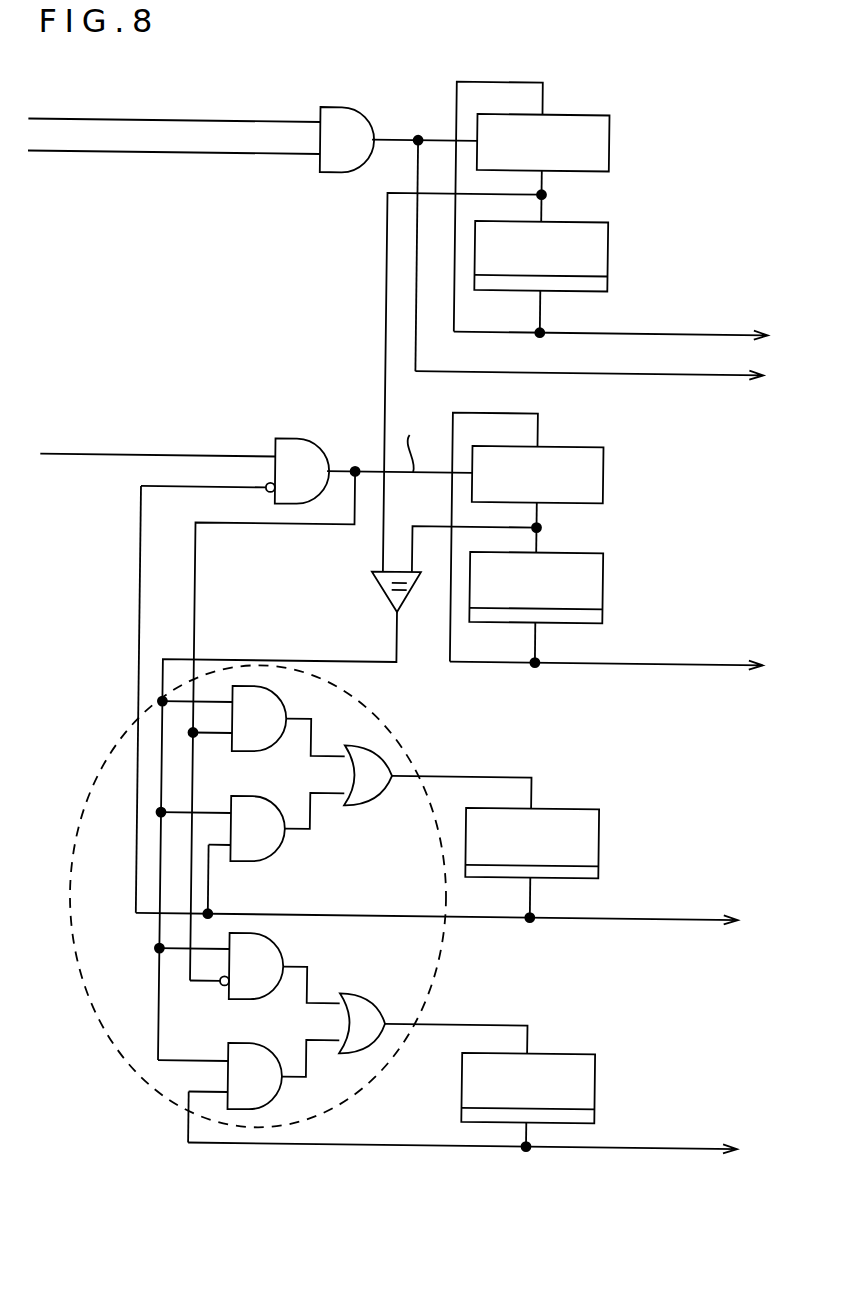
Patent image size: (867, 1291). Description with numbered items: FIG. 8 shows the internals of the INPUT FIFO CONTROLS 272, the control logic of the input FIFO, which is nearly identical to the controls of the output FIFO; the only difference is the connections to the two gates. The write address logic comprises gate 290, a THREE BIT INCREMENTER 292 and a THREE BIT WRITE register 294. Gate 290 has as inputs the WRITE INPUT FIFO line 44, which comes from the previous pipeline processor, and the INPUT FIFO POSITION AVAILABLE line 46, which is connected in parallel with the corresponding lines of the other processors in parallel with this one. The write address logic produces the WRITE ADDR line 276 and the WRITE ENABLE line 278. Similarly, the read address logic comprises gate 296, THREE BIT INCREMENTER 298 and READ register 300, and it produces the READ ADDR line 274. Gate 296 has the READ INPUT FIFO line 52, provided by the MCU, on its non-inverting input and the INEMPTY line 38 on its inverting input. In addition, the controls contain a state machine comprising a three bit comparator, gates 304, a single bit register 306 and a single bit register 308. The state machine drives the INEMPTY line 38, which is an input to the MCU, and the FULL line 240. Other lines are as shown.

The input FIFO controls 272 is at (257, 266).
The WRITE INPUT FIFO line 44 is at (295, 120).
The INPUT FIFO POSITION AVAILABLE line 46 is at (237, 157).
The gate 290 is at (333, 120).
The three bit incrementer 292 is at (595, 133).
The three bit write register 294 is at (595, 232).
The write address line 276 is at (569, 333).
The write enable line 278 is at (571, 372).
The gate 296 is at (300, 455).
The INPUT FIFO READ line 52 is at (80, 454).
The three bit incrementer 298 is at (590, 470).
The read register 300 is at (588, 565).
The read address line 274 is at (575, 665).
The gates 304 is at (402, 748).
The single bit register 306 is at (575, 838).
The INEMPTY line 38 is at (568, 920).
The single bit register 308 is at (580, 1082).
The FULL line 240 is at (562, 1148).